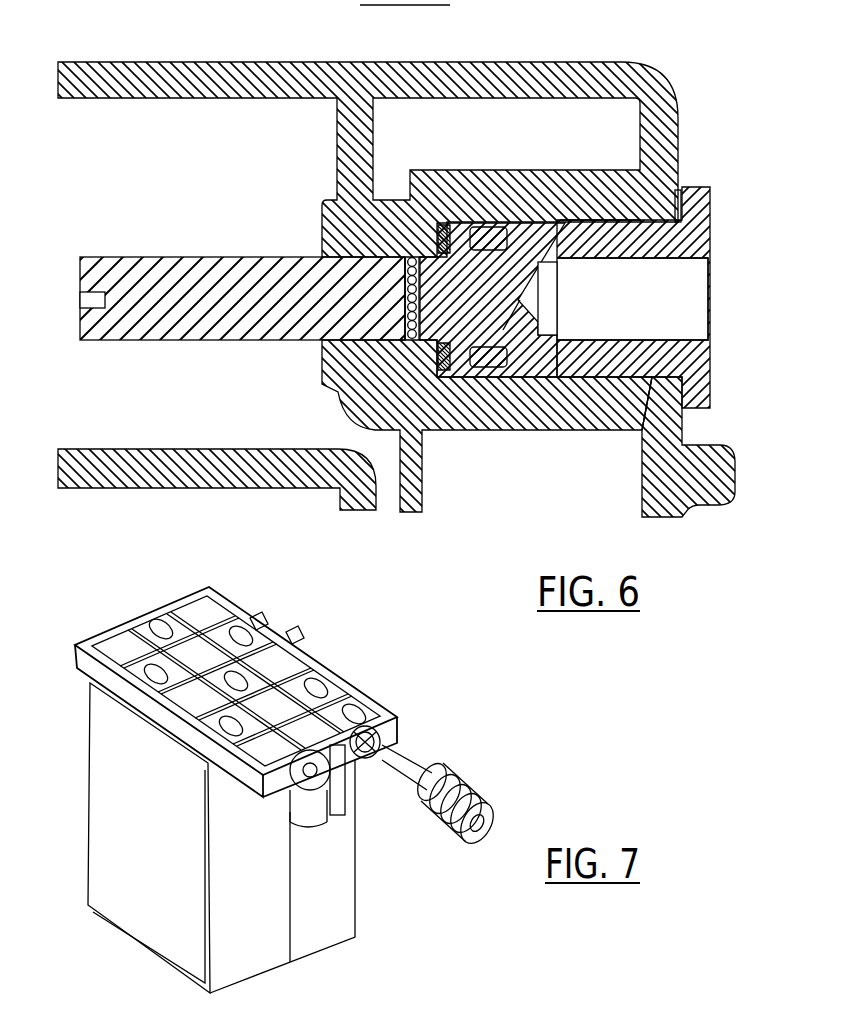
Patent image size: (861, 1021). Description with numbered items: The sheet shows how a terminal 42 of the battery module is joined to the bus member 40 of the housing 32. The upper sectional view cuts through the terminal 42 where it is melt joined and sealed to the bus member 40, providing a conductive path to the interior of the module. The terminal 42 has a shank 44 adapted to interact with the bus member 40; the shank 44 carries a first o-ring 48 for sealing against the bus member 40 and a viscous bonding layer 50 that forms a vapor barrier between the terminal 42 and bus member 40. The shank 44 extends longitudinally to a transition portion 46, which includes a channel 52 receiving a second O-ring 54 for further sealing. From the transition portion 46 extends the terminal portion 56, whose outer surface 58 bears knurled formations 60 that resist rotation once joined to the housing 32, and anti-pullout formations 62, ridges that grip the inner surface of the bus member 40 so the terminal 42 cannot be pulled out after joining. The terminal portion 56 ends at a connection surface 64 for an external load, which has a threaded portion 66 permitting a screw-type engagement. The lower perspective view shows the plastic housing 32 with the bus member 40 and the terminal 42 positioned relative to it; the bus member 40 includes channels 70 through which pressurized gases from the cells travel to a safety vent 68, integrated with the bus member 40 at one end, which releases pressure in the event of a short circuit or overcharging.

In FIG. 7, the housing 32 is at (333, 950).
In FIG. 6, the bus member 40 is at (627, 62).
In FIG. 7, the bus member 40 is at (338, 660).
In FIG. 6, the terminal 42 is at (238, 225).
In FIG. 7, the terminal 42 is at (432, 773).
In FIG. 6, the shank 44 is at (185, 338).
In FIG. 6, the transition portion 46 is at (520, 320).
In FIG. 6, the first o-ring 48 is at (450, 368).
In FIG. 6, the viscous bonding layer 50 is at (420, 345).
In FIG. 6, the channel 52 is at (503, 330).
In FIG. 6, the second O-ring 54 is at (488, 242).
In FIG. 6, the terminal portion 56 is at (660, 222).
In FIG. 6, the outer surface 58 is at (585, 218).
In FIG. 6, the knurled formations 60 is at (652, 380).
In FIG. 6, the anti-pullout formations 62 is at (575, 392).
In FIG. 6, the connection surface 64 is at (700, 232).
In FIG. 6, the threaded portion 66 is at (672, 340).
In FIG. 7, the safety vent 68 is at (333, 813).
In FIG. 7, the channels 70 is at (293, 637).